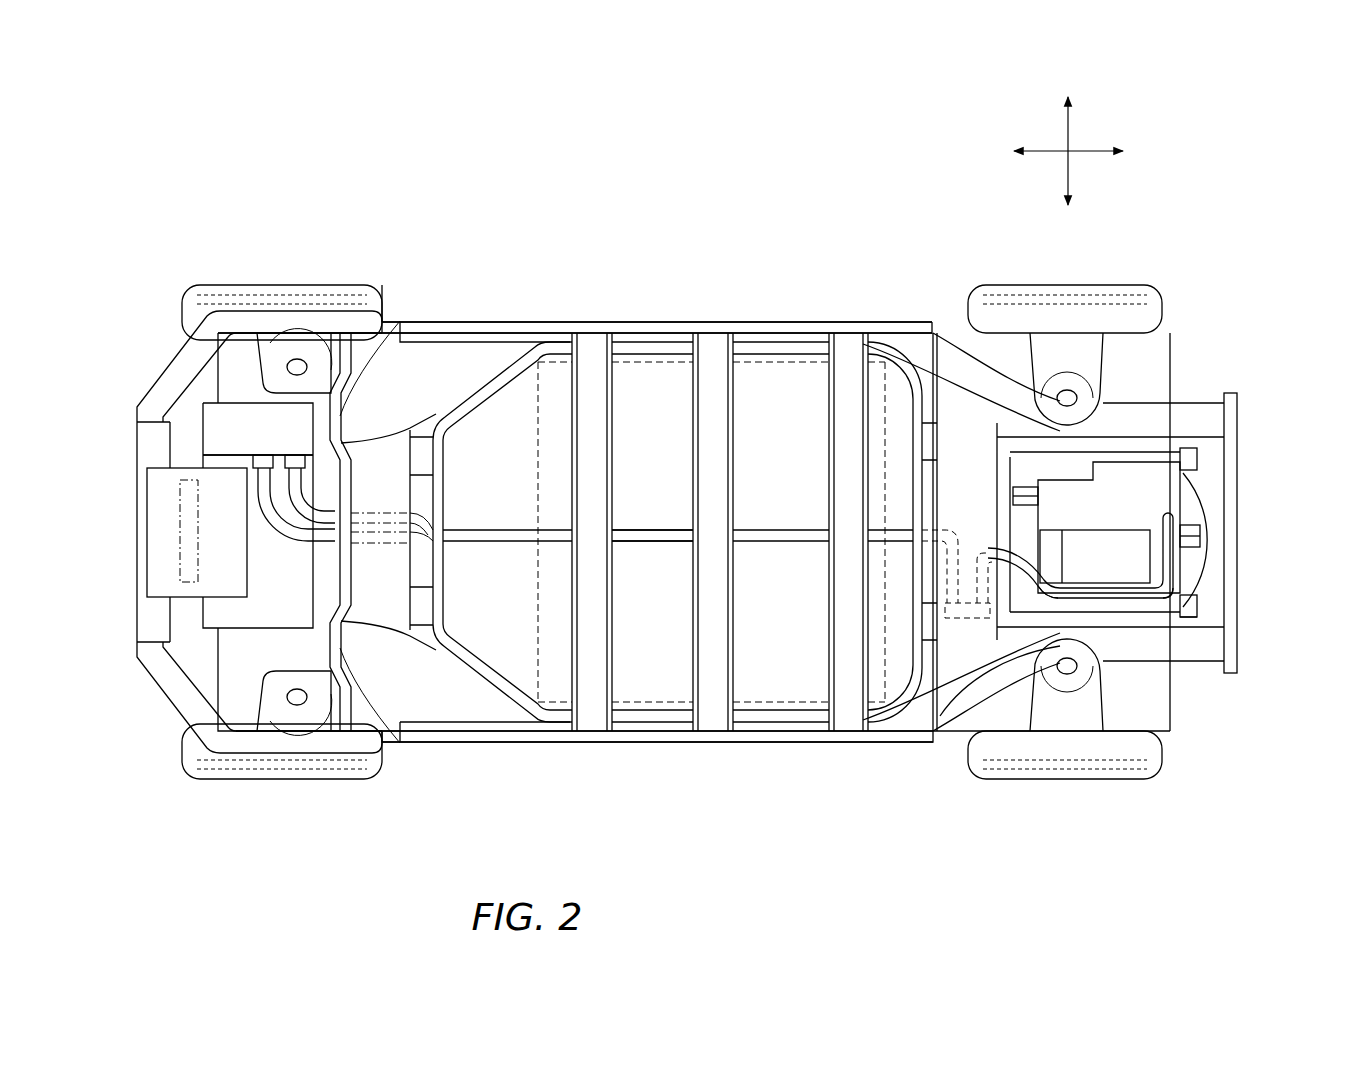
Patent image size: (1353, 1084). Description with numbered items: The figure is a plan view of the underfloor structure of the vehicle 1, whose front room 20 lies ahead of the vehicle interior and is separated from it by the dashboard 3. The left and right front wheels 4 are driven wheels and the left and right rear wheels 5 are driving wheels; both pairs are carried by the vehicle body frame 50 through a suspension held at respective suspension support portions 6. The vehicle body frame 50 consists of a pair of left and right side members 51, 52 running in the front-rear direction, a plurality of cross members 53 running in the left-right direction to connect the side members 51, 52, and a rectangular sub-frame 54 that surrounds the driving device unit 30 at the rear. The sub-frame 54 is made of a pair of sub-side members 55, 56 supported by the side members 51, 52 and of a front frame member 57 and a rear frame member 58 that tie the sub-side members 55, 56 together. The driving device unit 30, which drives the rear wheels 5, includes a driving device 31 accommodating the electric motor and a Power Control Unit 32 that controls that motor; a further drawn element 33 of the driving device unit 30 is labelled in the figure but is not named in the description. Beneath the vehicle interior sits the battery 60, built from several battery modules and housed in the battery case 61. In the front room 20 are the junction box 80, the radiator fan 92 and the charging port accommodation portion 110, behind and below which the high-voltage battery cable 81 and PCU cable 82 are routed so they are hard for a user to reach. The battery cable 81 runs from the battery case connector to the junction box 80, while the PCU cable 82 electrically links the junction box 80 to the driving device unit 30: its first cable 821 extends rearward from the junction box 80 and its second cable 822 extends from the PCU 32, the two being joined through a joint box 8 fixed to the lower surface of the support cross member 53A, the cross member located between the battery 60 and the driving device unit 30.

The vehicle 1 is at (735, 233).
The dashboard 3 is at (337, 413).
The front wheels 4 is at (315, 283).
The rear wheels 5 is at (1103, 285).
The suspension support portions 6 is at (255, 367).
The joint box 8 is at (960, 618).
The front room 20 is at (170, 620).
The driving device unit 30 is at (1152, 467).
The driving device 31 is at (1168, 565).
The Power Control Unit (PCU) 32 is at (1182, 485).
The pipe connector 33 is at (1167, 520).
The vehicle body frame 50 is at (639, 531).
The side member 51 is at (748, 327).
The side member 52 is at (772, 743).
The cross members 53 is at (376, 477).
The support cross member 53A is at (972, 640).
The sub-frame 54 is at (1197, 483).
The sub-side member 55 is at (1197, 460).
The sub-side member 56 is at (1180, 600).
The front frame member 57 is at (1018, 556).
The rear frame member 58 is at (1188, 598).
The battery 60 is at (540, 393).
The battery case 61 is at (648, 343).
The junction box 80 is at (240, 600).
The battery cable 81 is at (267, 532).
The PCU cable 82 is at (322, 525).
The radiator fan 92 is at (178, 563).
The charging port accommodation portion 110 is at (178, 522).
The first cable 821 is at (780, 530).
The second cable 822 is at (1190, 618).